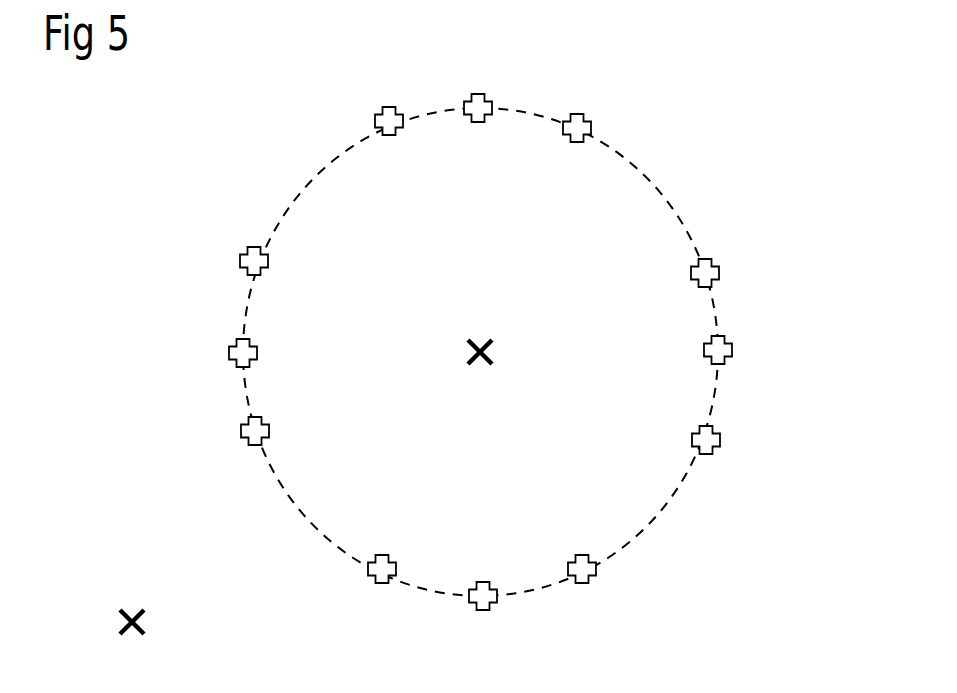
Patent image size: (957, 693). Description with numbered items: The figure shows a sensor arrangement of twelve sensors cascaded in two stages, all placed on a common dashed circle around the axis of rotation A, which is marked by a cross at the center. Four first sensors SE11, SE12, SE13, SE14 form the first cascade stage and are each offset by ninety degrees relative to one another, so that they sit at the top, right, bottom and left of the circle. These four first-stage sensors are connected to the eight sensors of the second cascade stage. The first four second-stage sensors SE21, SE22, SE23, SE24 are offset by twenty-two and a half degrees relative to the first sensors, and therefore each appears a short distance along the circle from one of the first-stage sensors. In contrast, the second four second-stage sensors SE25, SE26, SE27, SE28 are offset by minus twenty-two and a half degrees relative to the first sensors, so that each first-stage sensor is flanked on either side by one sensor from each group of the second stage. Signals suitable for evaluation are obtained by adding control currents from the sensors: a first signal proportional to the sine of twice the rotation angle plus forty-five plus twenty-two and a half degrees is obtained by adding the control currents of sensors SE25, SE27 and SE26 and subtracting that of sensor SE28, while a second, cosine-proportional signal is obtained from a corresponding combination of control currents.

The axis of rotation A is at (478, 335).
The first sensor SE11 is at (473, 92).
The first sensor SE12 is at (736, 347).
The first sensor SE13 is at (482, 617).
The first sensor SE14 is at (229, 354).
The second cascade stage sensor SE21 is at (575, 114).
The second cascade stage sensor SE22 is at (725, 438).
The second cascade stage sensor SE23 is at (375, 587).
The second cascade stage sensor SE24 is at (240, 260).
The second cascade stage sensor SE25 is at (722, 264).
The second cascade stage sensor SE26 is at (585, 586).
The second cascade stage sensor SE27 is at (234, 441).
The second cascade stage sensor SE28 is at (375, 110).